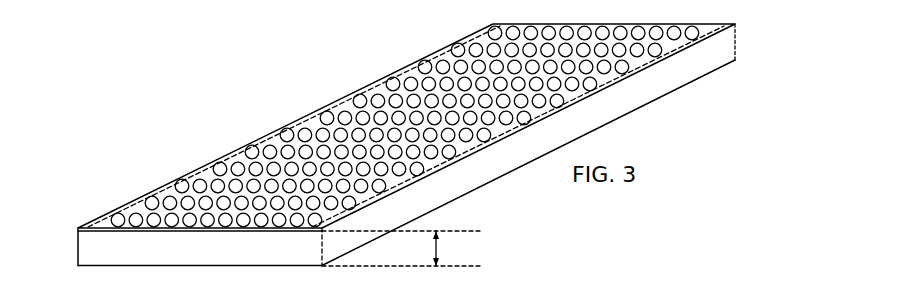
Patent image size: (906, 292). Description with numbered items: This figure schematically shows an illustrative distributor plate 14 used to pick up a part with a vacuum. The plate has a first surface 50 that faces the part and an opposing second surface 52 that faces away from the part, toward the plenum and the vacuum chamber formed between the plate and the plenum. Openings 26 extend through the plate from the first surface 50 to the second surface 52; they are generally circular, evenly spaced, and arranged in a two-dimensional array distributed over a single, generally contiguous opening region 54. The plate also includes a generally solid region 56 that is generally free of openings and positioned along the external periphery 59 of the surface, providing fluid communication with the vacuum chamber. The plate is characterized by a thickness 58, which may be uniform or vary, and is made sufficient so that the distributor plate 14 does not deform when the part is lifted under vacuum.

The distributor plate 14 is at (414, 158).
The openings 26 is at (282, 134).
The first surface 50 is at (429, 127).
The second surface 52 is at (165, 266).
The opening region 54 is at (445, 98).
The generally solid region 56 is at (665, 53).
The thickness 58 is at (437, 249).
The external periphery 59 is at (106, 228).